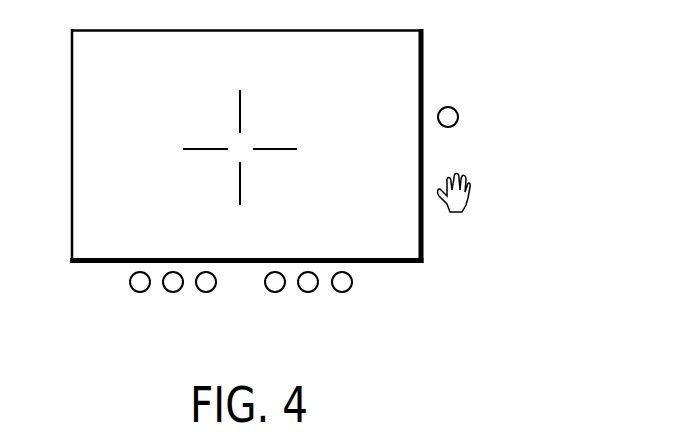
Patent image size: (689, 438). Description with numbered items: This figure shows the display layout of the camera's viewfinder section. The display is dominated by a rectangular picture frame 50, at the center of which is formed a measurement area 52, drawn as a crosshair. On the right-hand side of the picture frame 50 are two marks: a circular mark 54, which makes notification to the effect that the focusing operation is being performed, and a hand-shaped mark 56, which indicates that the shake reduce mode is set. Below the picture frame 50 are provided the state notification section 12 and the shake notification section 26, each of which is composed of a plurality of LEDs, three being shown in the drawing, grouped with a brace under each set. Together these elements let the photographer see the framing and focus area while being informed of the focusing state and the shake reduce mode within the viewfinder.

The picture frame 50 is at (424, 41).
The measurement area 52 is at (212, 111).
The mark 54 is at (459, 115).
The mark 56 is at (468, 200).
The state notification section 12 is at (223, 300).
The shake notification section 26 is at (358, 300).